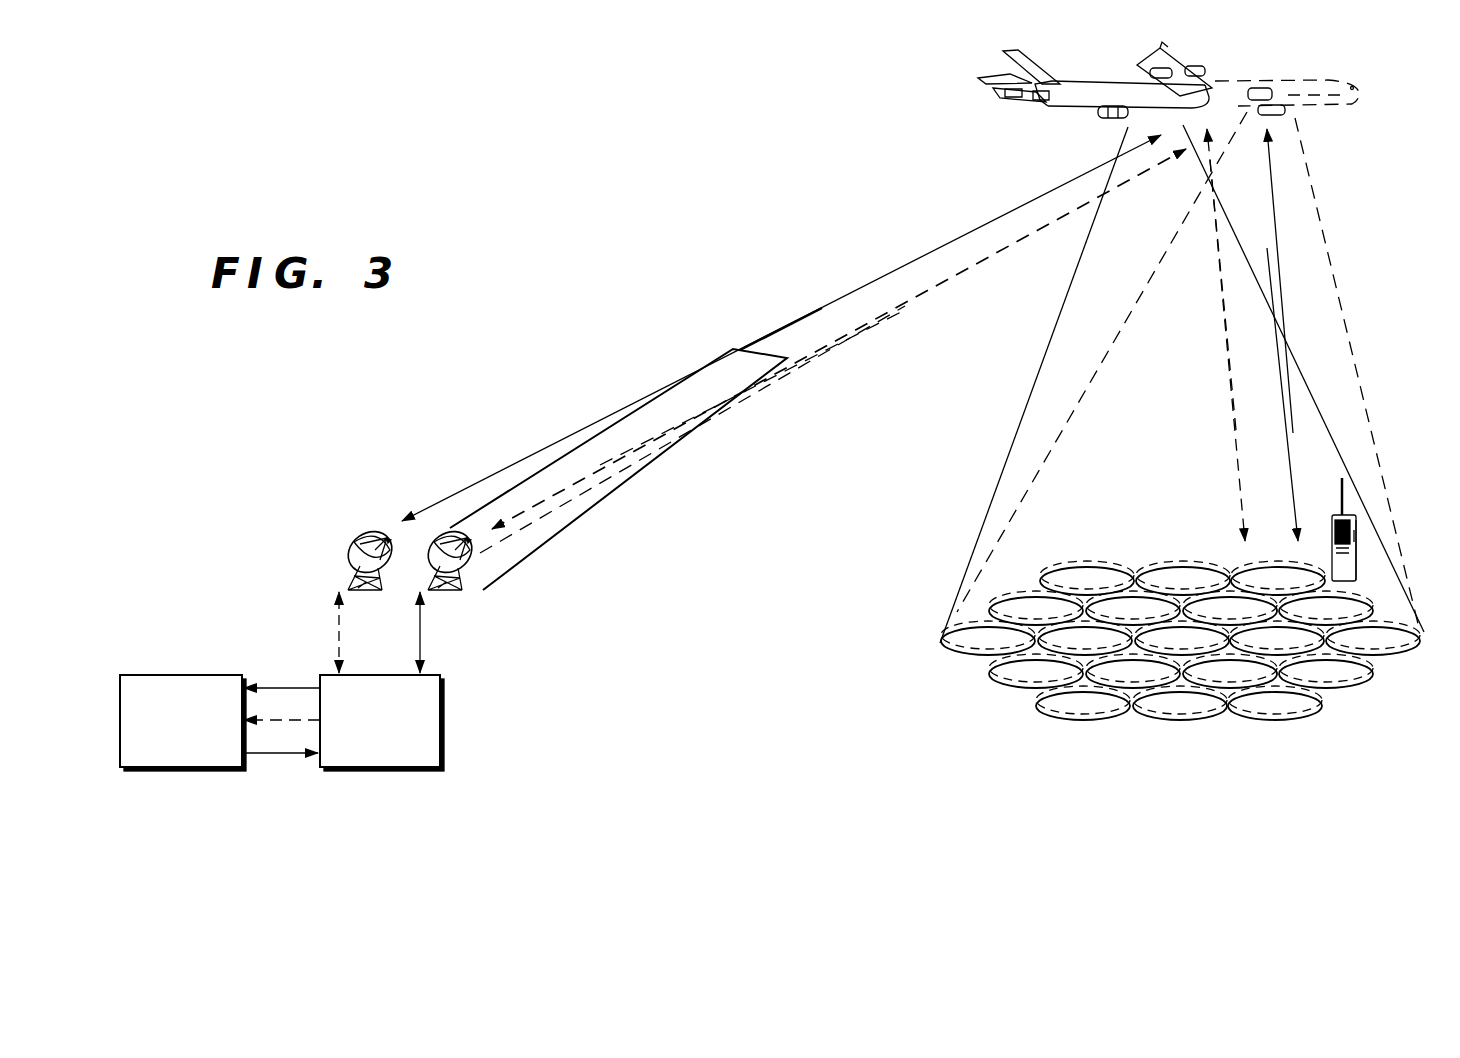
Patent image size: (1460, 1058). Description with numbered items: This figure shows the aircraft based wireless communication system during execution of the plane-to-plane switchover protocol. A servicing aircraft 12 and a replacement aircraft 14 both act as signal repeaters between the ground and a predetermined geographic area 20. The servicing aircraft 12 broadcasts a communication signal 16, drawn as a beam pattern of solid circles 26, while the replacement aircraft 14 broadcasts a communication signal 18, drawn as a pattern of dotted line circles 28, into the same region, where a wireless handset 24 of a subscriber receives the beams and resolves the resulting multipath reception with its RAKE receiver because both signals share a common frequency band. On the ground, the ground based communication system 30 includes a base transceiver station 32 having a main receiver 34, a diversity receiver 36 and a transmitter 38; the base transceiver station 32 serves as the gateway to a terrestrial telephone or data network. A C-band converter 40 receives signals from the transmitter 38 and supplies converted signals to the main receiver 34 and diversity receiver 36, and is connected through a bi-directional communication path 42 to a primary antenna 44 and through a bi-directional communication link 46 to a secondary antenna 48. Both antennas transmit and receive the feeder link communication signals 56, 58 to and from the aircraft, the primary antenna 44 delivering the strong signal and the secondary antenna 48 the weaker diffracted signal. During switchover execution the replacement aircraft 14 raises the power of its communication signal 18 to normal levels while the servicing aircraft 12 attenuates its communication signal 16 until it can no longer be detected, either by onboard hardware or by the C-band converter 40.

The servicing aircraft 12 is at (1040, 106).
The replacement aircraft 14 is at (1343, 105).
The communication signal 16 is at (1316, 411).
The communication signal 18 is at (1344, 314).
The predetermined geographic area 20 is at (1378, 701).
The wireless handset 24 is at (1334, 530).
The solid circles 26 is at (1408, 658).
The dotted line circles 28 is at (1012, 596).
The ground based communication system 30 is at (245, 636).
The base transceiver station 32 is at (170, 675).
The main receiver 34 is at (283, 688).
The diversity receiver 36 is at (301, 723).
The transmitter 38 is at (280, 757).
The C-band converter 40 is at (365, 770).
The bi-directional communication path 42 is at (423, 628).
The primary antenna 44 is at (437, 545).
The bi-directional communication link 46 is at (338, 628).
The secondary antenna 48 is at (357, 532).
The feeder link communication signal 56 is at (790, 340).
The feeder link communication signal 58 is at (836, 345).